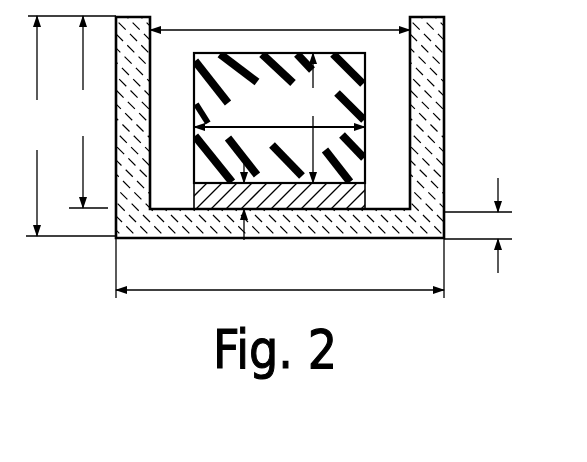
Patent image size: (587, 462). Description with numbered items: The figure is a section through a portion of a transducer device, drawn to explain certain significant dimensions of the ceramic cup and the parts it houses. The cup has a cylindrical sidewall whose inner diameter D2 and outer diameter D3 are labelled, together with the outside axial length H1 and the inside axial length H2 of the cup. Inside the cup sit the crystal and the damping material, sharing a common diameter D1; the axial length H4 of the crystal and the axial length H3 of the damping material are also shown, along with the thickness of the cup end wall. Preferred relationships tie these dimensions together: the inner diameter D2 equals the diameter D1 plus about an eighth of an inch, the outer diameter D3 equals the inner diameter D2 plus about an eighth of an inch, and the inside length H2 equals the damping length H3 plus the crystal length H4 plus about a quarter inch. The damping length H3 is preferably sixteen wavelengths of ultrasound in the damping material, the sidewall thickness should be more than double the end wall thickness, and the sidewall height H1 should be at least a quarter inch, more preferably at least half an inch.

The diameter of the crystal and damping material D1 is at (279, 108).
The inner diameter of the cylindrical sidewall D2 is at (280, 16).
The outer diameter of the cylindrical sidewall D3 is at (280, 268).
The outside axial length of the cup H1 is at (69, 126).
The inside axial length of the cup H2 is at (88, 112).
The axial length of the damping material H3 is at (315, 118).
The axial length of the crystal H4 is at (243, 200).